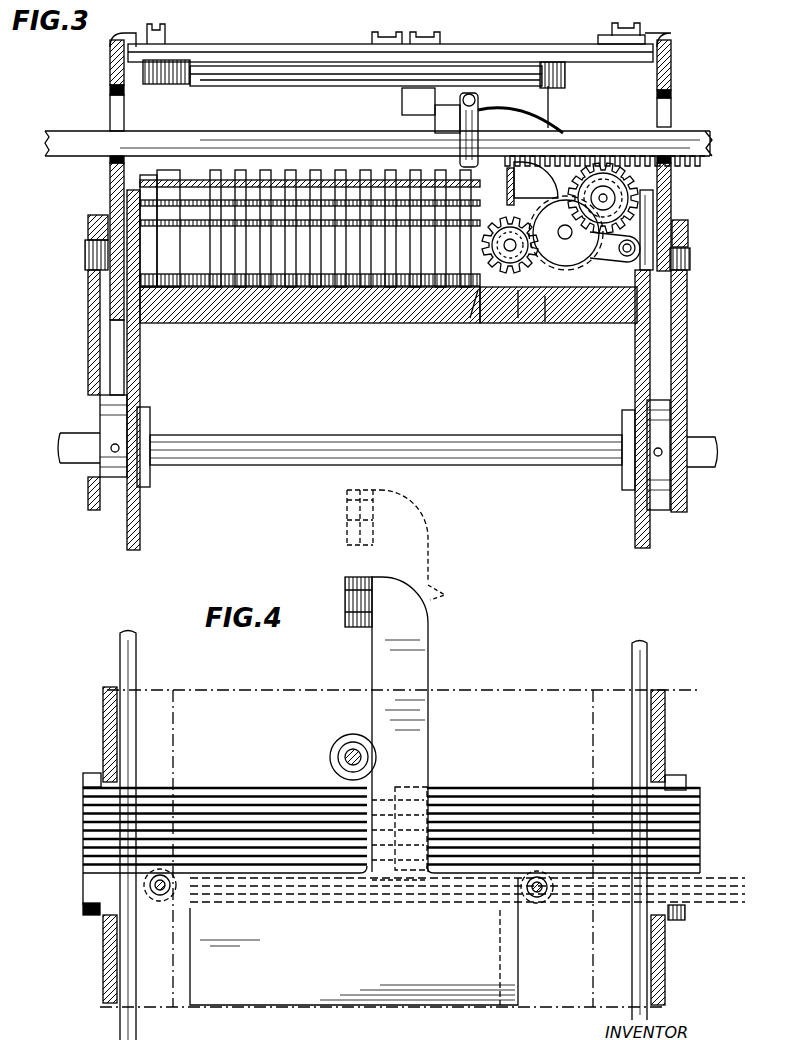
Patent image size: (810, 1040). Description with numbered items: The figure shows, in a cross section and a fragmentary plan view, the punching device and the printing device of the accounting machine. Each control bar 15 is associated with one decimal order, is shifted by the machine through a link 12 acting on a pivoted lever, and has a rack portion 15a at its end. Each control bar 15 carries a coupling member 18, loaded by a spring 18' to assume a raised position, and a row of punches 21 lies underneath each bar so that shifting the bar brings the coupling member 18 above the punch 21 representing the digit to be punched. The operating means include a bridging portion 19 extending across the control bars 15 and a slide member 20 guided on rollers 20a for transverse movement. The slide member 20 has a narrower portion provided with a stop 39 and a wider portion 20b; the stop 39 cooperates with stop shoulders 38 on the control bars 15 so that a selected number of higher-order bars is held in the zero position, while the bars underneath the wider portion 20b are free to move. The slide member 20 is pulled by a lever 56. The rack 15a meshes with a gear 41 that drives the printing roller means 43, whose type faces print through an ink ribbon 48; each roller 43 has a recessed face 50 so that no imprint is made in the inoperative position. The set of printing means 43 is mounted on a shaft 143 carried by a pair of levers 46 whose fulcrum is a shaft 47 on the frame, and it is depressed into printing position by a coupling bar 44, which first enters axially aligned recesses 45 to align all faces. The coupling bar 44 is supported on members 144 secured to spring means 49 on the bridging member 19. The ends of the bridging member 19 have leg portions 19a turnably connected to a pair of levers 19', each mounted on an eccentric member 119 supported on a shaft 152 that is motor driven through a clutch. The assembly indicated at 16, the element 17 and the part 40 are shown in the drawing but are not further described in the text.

In FIG. 3, the link 12 is at (558, 305).
In FIG. 3, the control bar 15 is at (186, 145).
In FIG. 4, the control bar 15 is at (248, 800).
In FIG. 3, the rack portion 15a is at (692, 132).
In FIG. 3, the carriage assembly 16 is at (349, 408).
In FIG. 4, the carriage assembly 16 is at (513, 728).
In FIG. 3, the bracket 17 is at (545, 322).
In FIG. 3, the coupling member 18 is at (457, 130).
In FIG. 3, the spring 18' is at (520, 113).
In FIG. 3, the bridging portion 19 is at (390, 45).
In FIG. 3, the leg portion 19a is at (112, 185).
In FIG. 3, the lever 19' is at (82, 362).
In FIG. 4, the lever 19' is at (380, 836).
In FIG. 3, the slide member 20 is at (334, 82).
In FIG. 4, the slide member 20 is at (430, 608).
In FIG. 3, the roller 20a is at (145, 72).
In FIG. 4, the roller 20a is at (165, 900).
In FIG. 4, the wider portion 20b is at (337, 995).
In FIG. 3, the punch 21 is at (290, 170).
In FIG. 4, the punch 21 is at (252, 892).
In FIG. 3, the stop shoulder 38 is at (436, 122).
In FIG. 4, the stop shoulder 38 is at (435, 812).
In FIG. 3, the stop 39 is at (402, 104).
In FIG. 4, the stop 39 is at (400, 787).
In FIG. 3, the rack 40 is at (707, 166).
In FIG. 3, the gear 41 is at (660, 185).
In FIG. 3, the printing roller means 43 is at (566, 233).
In FIG. 3, the coupling bar 44 is at (505, 168).
In FIG. 3, the axially aligned recess 45 is at (470, 318).
In FIG. 3, the lever 46 is at (615, 255).
In FIG. 3, the shaft 47 is at (688, 235).
In FIG. 3, the ink ribbon 48 is at (518, 318).
In FIG. 3, the spring means 49 is at (483, 39).
In FIG. 3, the recessed face 50 is at (326, 305).
In FIG. 4, the lever 56 is at (346, 580).
In FIG. 3, the eccentric member 119 is at (100, 410).
In FIG. 3, the shaft 143 is at (505, 218).
In FIG. 3, the member 144 is at (550, 110).
In FIG. 3, the shaft 152 is at (425, 445).